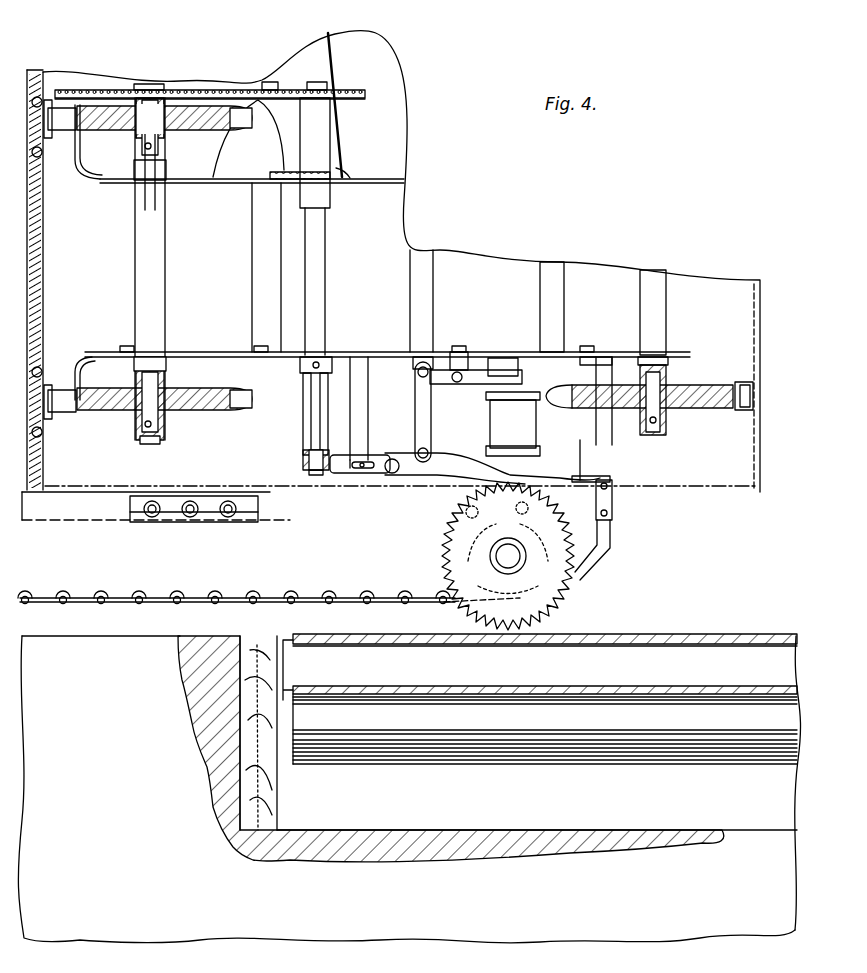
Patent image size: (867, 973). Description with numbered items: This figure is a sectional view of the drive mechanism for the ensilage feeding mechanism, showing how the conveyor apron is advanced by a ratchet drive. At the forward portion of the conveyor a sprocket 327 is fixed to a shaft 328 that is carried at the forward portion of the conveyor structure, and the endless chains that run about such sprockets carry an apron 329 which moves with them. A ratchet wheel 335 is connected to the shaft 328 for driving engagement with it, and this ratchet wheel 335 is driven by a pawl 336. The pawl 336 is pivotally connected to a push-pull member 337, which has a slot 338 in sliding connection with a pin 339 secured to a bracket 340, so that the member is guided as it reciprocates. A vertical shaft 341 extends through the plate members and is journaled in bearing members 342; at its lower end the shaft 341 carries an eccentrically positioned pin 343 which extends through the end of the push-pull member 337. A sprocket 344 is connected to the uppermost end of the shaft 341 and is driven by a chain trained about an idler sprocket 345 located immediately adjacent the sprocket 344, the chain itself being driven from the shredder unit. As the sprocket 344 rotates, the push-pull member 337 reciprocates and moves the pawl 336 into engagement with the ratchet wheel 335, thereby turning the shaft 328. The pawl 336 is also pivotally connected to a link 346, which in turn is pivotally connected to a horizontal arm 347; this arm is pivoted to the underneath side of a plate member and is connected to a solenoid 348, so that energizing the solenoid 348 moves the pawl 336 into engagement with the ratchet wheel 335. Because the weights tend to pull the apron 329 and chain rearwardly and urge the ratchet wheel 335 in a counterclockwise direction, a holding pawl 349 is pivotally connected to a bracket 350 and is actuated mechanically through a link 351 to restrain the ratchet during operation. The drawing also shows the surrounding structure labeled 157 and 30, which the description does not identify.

The idler sprocket 345 is at (122, 88).
The bushing 157 is at (226, 90).
The sprocket 344 is at (318, 86).
The shaft 341 is at (326, 250).
The bearing members 342 is at (330, 357).
The eccentrically positioned pin 343 is at (318, 476).
The bracket 340 is at (366, 383).
The horizontal arm 347 is at (475, 368).
The link 346 is at (430, 412).
The solenoid 348 is at (538, 400).
The link 351 is at (585, 474).
The bracket 350 is at (612, 500).
The holding pawl 349 is at (612, 530).
The push-pull member 337 is at (380, 474).
The slot 338 is at (356, 460).
The pin 339 is at (370, 462).
The pawl 336 is at (500, 476).
The apron 329 is at (200, 496).
The sprocket 327 is at (565, 573).
The shaft 328 is at (495, 556).
The ratchet wheel 335 is at (560, 592).
The housing 30 is at (680, 632).